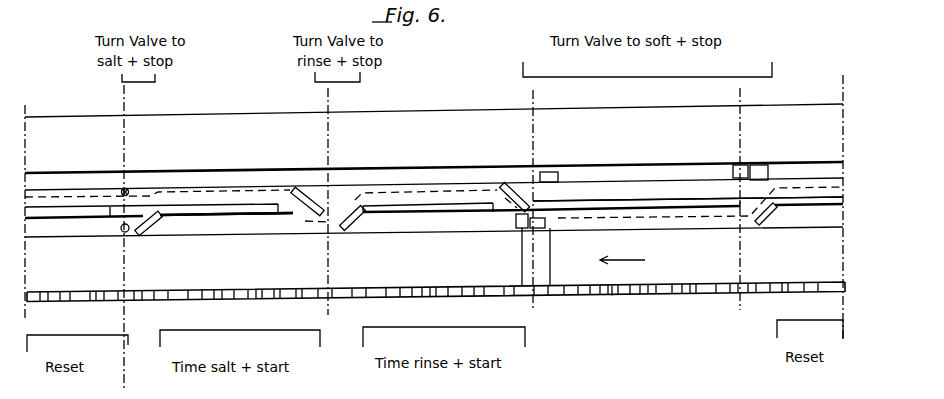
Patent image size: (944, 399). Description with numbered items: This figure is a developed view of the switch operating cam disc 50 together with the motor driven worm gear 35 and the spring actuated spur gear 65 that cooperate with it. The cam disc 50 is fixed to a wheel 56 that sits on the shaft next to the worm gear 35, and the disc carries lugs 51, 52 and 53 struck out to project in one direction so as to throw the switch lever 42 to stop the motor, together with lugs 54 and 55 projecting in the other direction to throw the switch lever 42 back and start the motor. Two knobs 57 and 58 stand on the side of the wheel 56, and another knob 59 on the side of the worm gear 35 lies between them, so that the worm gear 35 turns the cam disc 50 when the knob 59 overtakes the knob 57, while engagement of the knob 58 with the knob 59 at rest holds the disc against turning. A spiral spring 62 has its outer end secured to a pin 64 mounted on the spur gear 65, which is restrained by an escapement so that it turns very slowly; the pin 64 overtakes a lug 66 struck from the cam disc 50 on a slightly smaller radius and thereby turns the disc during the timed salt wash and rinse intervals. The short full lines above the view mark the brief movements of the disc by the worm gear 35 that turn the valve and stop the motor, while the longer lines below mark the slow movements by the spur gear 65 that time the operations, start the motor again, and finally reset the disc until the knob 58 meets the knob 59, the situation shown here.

The worm gear 35 is at (435, 118).
The switch lever 42 is at (127, 190).
The cam disc 50 is at (217, 205).
The lug 51 is at (150, 224).
The lug 52 is at (352, 222).
The lug 53 is at (770, 214).
The lug 54 is at (300, 188).
The lug 55 is at (517, 185).
The wheel 56 is at (648, 190).
The knob 57 is at (562, 176).
The knob 58 is at (765, 172).
The knob 59 is at (730, 170).
The spiral spring 62 is at (720, 268).
The pin 64 is at (545, 230).
The spur gear 65 is at (630, 293).
The lug 66 is at (516, 220).